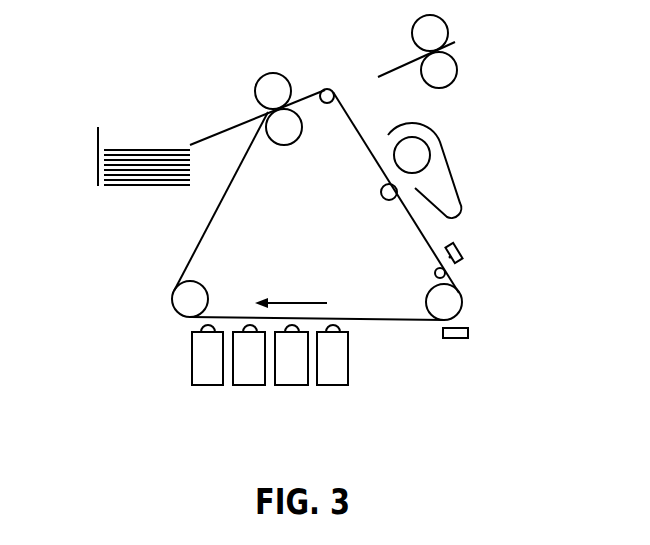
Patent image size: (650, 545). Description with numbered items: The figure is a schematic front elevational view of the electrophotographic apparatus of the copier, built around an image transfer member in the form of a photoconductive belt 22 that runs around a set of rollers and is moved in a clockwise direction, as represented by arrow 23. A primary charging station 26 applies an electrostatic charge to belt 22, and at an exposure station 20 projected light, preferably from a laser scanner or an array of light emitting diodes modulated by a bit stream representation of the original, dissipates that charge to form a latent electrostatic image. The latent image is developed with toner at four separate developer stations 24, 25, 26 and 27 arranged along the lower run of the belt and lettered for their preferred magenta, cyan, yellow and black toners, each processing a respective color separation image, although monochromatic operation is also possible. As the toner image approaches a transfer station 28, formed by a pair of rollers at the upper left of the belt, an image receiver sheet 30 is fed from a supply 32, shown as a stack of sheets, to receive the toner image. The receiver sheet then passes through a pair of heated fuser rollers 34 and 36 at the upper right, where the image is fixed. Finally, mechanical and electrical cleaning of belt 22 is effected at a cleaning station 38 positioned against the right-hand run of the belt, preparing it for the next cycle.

The exposure station 20 is at (455, 338).
The photoconductive belt 22 is at (233, 185).
The arrow 23 is at (303, 300).
The developer station 24 is at (209, 374).
The developer station 25 is at (246, 374).
The primary charging station 26 is at (498, 259).
The developer station 27 is at (335, 376).
The transfer station 28 is at (278, 82).
The image receiver sheet 30 is at (205, 137).
The supply 32 is at (100, 175).
The heated fuser roller 34 is at (443, 72).
The heated fuser roller 36 is at (418, 31).
The cleaning station 38 is at (466, 177).